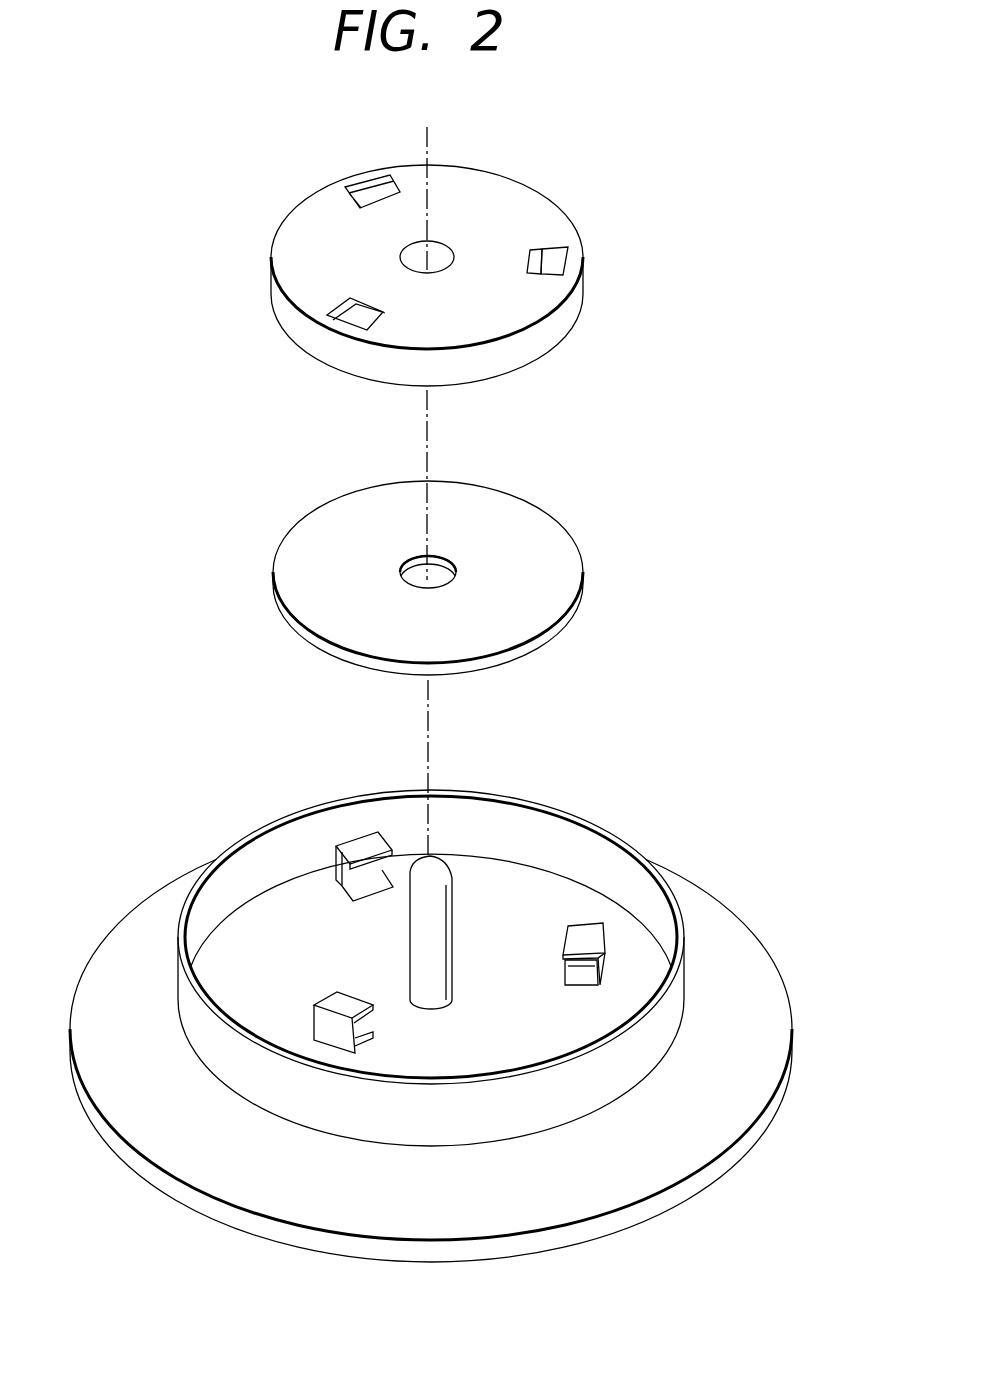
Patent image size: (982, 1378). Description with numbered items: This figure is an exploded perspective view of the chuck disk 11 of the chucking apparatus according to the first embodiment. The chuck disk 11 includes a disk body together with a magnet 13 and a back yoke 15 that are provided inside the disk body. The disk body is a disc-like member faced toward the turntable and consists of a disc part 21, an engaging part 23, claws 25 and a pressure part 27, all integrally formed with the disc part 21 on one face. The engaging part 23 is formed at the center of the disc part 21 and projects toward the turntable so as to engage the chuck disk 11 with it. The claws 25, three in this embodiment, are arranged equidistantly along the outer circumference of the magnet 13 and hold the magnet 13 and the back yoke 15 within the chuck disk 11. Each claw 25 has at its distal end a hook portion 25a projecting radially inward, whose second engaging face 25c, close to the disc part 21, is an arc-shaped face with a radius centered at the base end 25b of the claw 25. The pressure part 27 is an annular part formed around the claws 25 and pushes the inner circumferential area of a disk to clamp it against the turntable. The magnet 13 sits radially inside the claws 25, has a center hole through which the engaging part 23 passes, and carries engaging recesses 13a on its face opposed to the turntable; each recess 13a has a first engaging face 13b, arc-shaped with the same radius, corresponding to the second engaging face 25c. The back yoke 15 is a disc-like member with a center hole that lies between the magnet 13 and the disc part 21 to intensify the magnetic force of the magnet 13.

The chuck disk 11 is at (437, 1001).
The magnet 13 is at (489, 257).
The engaging recess 13a is at (537, 250).
The first engaging face 13b is at (567, 258).
The back yoke 15 is at (563, 487).
The disc part 21 is at (726, 972).
The engaging part 23 is at (432, 858).
The claw 25 is at (476, 1012).
The hook portion 25a is at (338, 990).
The base end 25b is at (579, 1001).
The second engaging face 25c is at (372, 1018).
The pressure part 27 is at (580, 815).